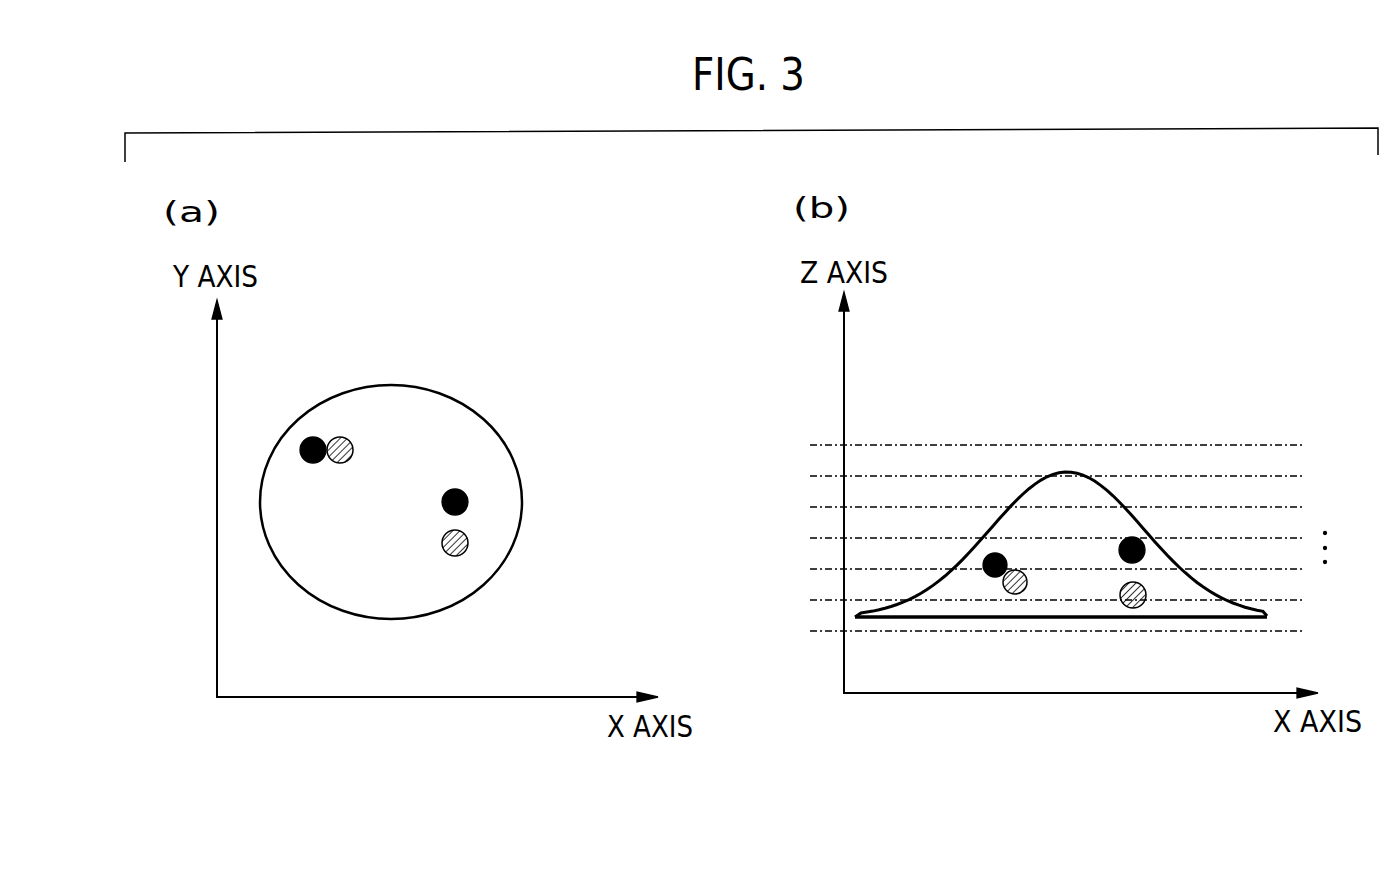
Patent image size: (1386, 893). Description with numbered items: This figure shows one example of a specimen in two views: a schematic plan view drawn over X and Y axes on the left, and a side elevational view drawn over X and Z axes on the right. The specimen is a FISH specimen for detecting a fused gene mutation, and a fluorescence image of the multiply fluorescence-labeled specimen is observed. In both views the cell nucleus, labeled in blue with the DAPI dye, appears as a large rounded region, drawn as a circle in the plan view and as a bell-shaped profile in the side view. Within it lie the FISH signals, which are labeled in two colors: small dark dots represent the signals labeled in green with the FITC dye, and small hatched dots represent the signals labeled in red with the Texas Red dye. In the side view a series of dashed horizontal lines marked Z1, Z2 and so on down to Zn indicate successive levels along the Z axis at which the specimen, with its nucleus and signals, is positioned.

The first Z-axis level Z1 is at (1074, 441).
The second Z-axis level Z2 is at (1074, 474).
The n-th Z-axis level Zn is at (1074, 629).